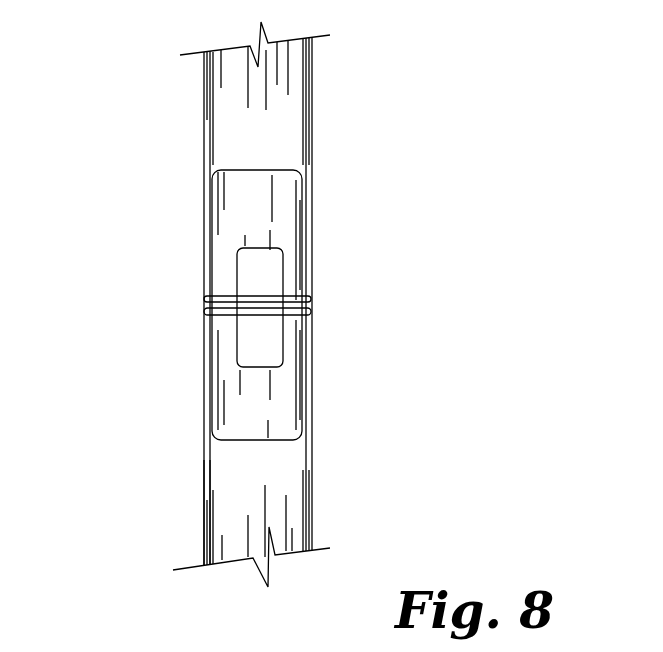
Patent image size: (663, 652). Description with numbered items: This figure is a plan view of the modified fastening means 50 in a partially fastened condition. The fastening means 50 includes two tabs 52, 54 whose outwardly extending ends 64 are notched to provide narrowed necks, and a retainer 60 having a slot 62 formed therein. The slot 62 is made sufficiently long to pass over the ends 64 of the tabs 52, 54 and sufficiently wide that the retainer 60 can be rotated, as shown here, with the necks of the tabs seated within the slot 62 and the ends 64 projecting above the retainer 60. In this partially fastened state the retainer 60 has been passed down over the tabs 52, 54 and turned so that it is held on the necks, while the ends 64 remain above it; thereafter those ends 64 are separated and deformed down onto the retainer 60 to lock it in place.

The modified fastening means 50 is at (150, 343).
The tab 52 is at (313, 140).
The tab 54 is at (203, 491).
The retainer 60 is at (303, 390).
The slot 62 is at (255, 366).
The ends 64 is at (312, 303).